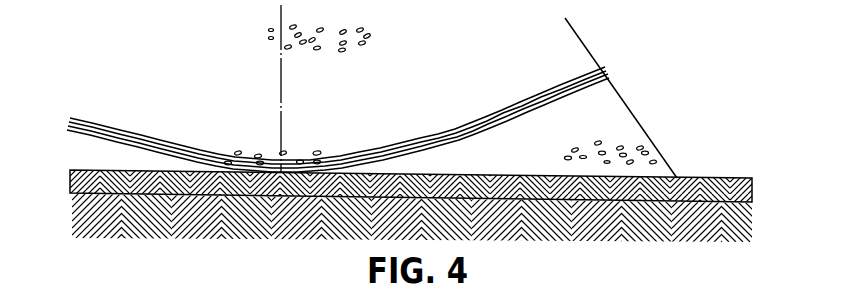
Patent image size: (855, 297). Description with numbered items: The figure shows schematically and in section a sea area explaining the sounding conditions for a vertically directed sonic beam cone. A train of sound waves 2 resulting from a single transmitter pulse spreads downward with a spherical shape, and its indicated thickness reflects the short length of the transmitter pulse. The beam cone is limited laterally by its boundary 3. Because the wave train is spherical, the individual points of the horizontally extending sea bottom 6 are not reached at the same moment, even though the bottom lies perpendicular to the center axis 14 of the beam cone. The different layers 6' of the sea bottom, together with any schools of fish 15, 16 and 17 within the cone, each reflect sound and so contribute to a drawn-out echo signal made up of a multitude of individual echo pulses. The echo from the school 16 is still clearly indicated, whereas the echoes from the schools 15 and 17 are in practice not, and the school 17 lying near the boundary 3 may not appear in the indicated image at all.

The train of sound waves 2 is at (609, 73).
The boundary of the beam cone 3 is at (593, 53).
The sea bottom 6 is at (427, 148).
The layers of the sea bottom 6' is at (427, 148).
The spray axis 14 is at (281, 82).
The school of fish 15 is at (322, 151).
The school of fish 16 is at (362, 46).
The school of fish 17 is at (607, 126).